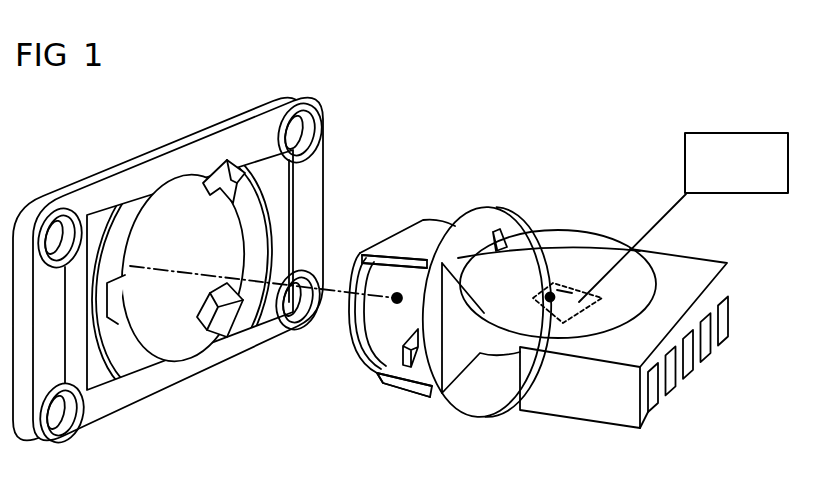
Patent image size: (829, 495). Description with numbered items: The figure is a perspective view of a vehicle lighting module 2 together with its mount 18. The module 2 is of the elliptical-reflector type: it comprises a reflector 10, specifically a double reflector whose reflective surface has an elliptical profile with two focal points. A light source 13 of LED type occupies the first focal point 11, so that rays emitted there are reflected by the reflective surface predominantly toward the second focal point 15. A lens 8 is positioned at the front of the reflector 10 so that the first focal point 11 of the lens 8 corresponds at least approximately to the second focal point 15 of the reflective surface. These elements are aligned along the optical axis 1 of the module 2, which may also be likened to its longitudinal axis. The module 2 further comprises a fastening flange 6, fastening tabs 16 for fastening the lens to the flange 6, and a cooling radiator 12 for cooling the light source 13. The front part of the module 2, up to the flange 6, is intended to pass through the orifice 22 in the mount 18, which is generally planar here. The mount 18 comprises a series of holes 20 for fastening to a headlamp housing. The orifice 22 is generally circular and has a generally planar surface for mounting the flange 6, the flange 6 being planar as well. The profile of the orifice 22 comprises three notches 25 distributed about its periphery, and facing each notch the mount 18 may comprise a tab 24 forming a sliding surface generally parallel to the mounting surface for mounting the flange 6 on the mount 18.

The optical axis 1 is at (186, 272).
The lighting module 2 is at (494, 178).
The fastening flange 6 is at (438, 397).
The lens 8 is at (356, 357).
The reflector 10 is at (567, 240).
The first focal point 11 is at (552, 295).
The cooling radiator 12 is at (572, 400).
The light source 13 is at (735, 194).
The second focal point 15 is at (396, 294).
The fastening tabs 16 is at (433, 228).
The mount 18 is at (140, 162).
The holes 20 is at (73, 233).
The orifice 22 is at (170, 343).
The tab 24 is at (210, 178).
The notches 25 is at (230, 192).